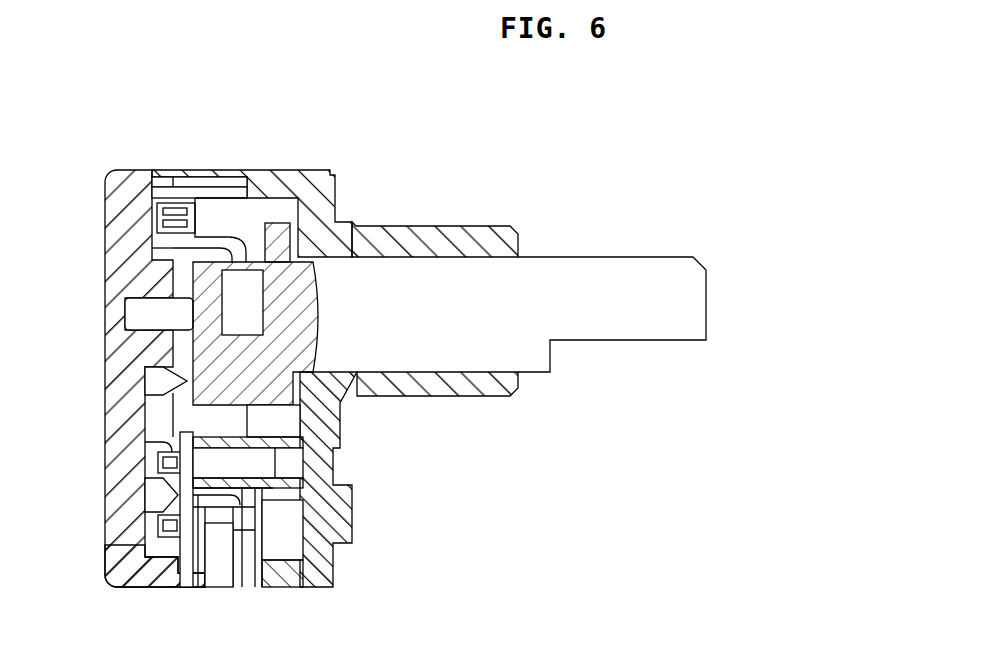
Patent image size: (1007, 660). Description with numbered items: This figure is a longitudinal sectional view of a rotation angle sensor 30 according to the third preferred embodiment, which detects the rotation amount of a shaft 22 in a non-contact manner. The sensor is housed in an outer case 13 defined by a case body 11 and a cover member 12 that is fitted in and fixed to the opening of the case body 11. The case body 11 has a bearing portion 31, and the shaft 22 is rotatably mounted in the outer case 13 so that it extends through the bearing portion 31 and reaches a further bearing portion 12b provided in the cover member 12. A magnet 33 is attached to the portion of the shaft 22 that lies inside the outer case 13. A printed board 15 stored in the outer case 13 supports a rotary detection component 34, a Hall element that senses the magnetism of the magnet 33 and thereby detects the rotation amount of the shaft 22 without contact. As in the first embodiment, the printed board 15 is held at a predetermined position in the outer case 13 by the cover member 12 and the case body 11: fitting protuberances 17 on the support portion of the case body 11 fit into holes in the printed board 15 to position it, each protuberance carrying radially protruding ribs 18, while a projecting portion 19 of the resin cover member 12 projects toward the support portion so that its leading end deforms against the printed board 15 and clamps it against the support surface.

The rotation angle sensor 30 is at (204, 99).
The bearing portion 31 is at (426, 245).
The shaft 22 is at (566, 276).
The magnet 33 is at (248, 316).
The rotary detection component 34 is at (260, 467).
The case body 11 is at (337, 574).
The cover member 12 is at (110, 522).
The bearing portion 12b is at (155, 350).
The outer case 13 is at (112, 600).
The printed board 15 is at (192, 553).
The fitting protuberance 17 is at (163, 214).
The rib 18 is at (170, 243).
The projecting portion 19 is at (148, 489).